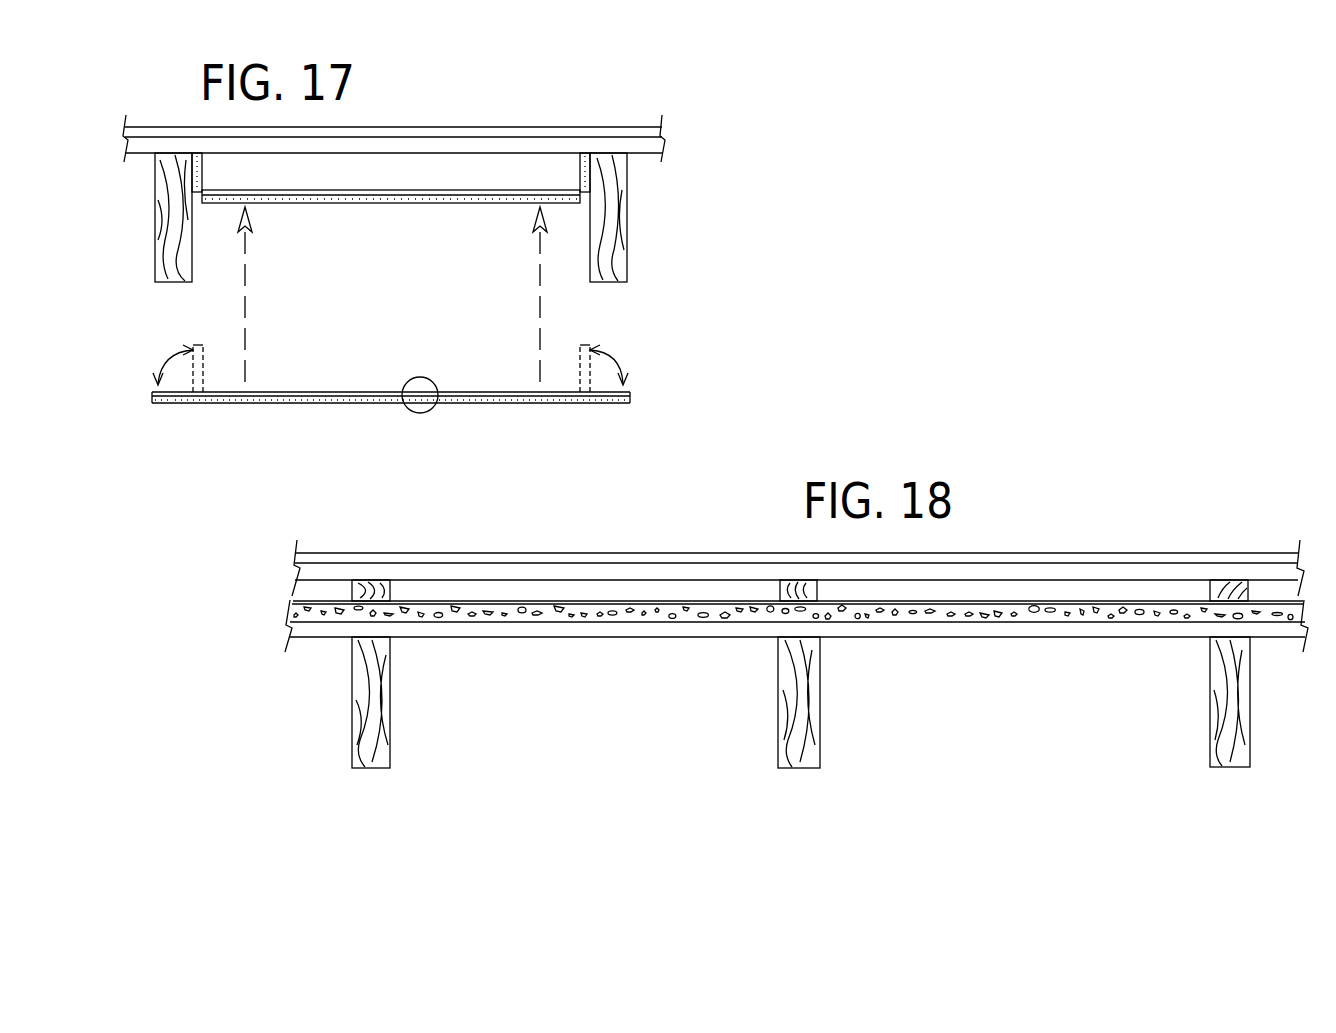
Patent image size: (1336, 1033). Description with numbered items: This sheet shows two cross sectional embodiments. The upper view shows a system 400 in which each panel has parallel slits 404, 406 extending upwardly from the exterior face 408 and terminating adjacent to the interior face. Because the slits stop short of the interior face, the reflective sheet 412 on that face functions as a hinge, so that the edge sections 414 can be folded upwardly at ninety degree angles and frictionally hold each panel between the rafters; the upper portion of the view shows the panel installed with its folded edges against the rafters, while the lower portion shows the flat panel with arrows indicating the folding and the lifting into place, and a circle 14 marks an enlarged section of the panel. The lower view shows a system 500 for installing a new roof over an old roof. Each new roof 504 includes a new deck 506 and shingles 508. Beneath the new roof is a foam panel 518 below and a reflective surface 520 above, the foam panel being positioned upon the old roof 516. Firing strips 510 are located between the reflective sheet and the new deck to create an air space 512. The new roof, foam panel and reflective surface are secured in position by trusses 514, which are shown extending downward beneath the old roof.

In FIG. 17, the system 400 is at (930, 103).
In FIG. 17, the parallel slit 404 is at (205, 403).
In FIG. 17, the parallel slit 406 is at (583, 395).
In FIG. 17, the exterior face 408 is at (493, 405).
In FIG. 17, the reflective sheet 412 is at (368, 392).
In FIG. 17, the edge section 414 is at (192, 153).
In FIG. 17, the circle 14 is at (435, 375).
In FIG. 18, the system 500 is at (1218, 411).
In FIG. 18, the new roof 504 is at (1272, 560).
In FIG. 18, the new deck 506 is at (1075, 572).
In FIG. 18, the shingles 508 is at (993, 557).
In FIG. 18, the firing strip 510 is at (1223, 598).
In FIG. 18, the air space 512 is at (485, 592).
In FIG. 18, the truss 514 is at (390, 683).
In FIG. 18, the old roof 516 is at (620, 630).
In FIG. 18, the foam panel 518 is at (917, 612).
In FIG. 18, the reflective surface 520 is at (977, 603).